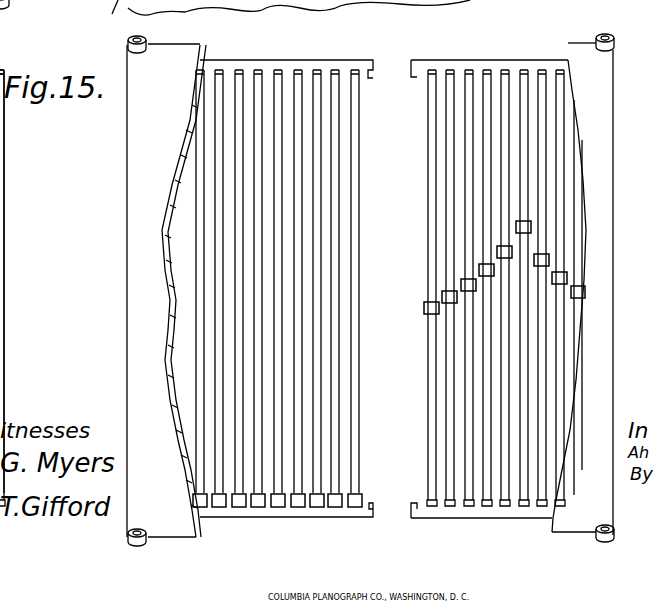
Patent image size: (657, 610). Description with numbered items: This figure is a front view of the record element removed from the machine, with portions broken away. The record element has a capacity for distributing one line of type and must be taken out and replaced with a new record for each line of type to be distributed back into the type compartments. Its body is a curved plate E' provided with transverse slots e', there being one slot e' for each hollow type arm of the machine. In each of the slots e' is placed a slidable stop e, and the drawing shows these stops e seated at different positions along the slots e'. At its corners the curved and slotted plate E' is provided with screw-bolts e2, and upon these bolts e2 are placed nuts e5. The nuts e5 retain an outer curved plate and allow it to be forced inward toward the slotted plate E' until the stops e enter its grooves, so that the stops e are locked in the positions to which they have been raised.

The slidable stop e is at (420, 381).
The transverse slots e' is at (291, 270).
The screw-bolts e2 is at (608, 553).
The nuts e5 is at (145, 43).
The curved plate E' is at (384, 269).